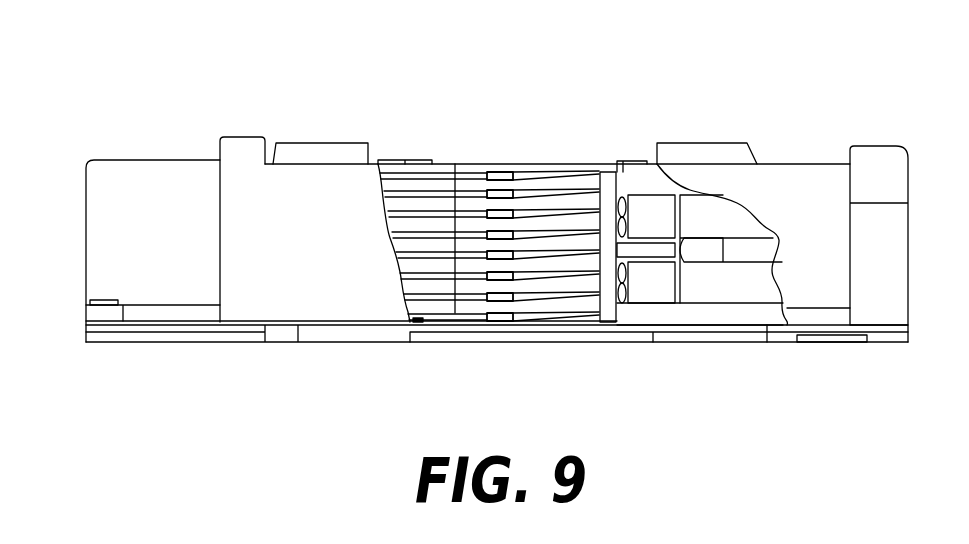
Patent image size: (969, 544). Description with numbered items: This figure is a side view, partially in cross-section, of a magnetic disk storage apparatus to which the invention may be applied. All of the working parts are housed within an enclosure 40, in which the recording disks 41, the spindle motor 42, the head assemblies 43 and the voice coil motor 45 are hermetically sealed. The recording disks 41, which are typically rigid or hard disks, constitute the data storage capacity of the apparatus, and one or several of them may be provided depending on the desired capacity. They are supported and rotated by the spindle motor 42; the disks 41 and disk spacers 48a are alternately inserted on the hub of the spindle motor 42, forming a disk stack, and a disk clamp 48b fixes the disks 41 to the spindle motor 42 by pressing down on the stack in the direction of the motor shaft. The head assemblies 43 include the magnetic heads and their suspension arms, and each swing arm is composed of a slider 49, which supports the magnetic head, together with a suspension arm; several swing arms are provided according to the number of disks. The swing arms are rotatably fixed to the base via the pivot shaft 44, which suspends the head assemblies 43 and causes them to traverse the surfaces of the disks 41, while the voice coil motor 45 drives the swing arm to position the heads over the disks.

The enclosure 40 is at (303, 173).
The recording disks 41 is at (467, 305).
The spindle motor 42 is at (428, 308).
The head assemblies 43 is at (540, 167).
The pivot shaft 44 is at (648, 163).
The voice coil motor 45 is at (753, 257).
The disk spacers 48a is at (433, 202).
The disk clamp 48b is at (382, 163).
The slider 49 is at (498, 168).